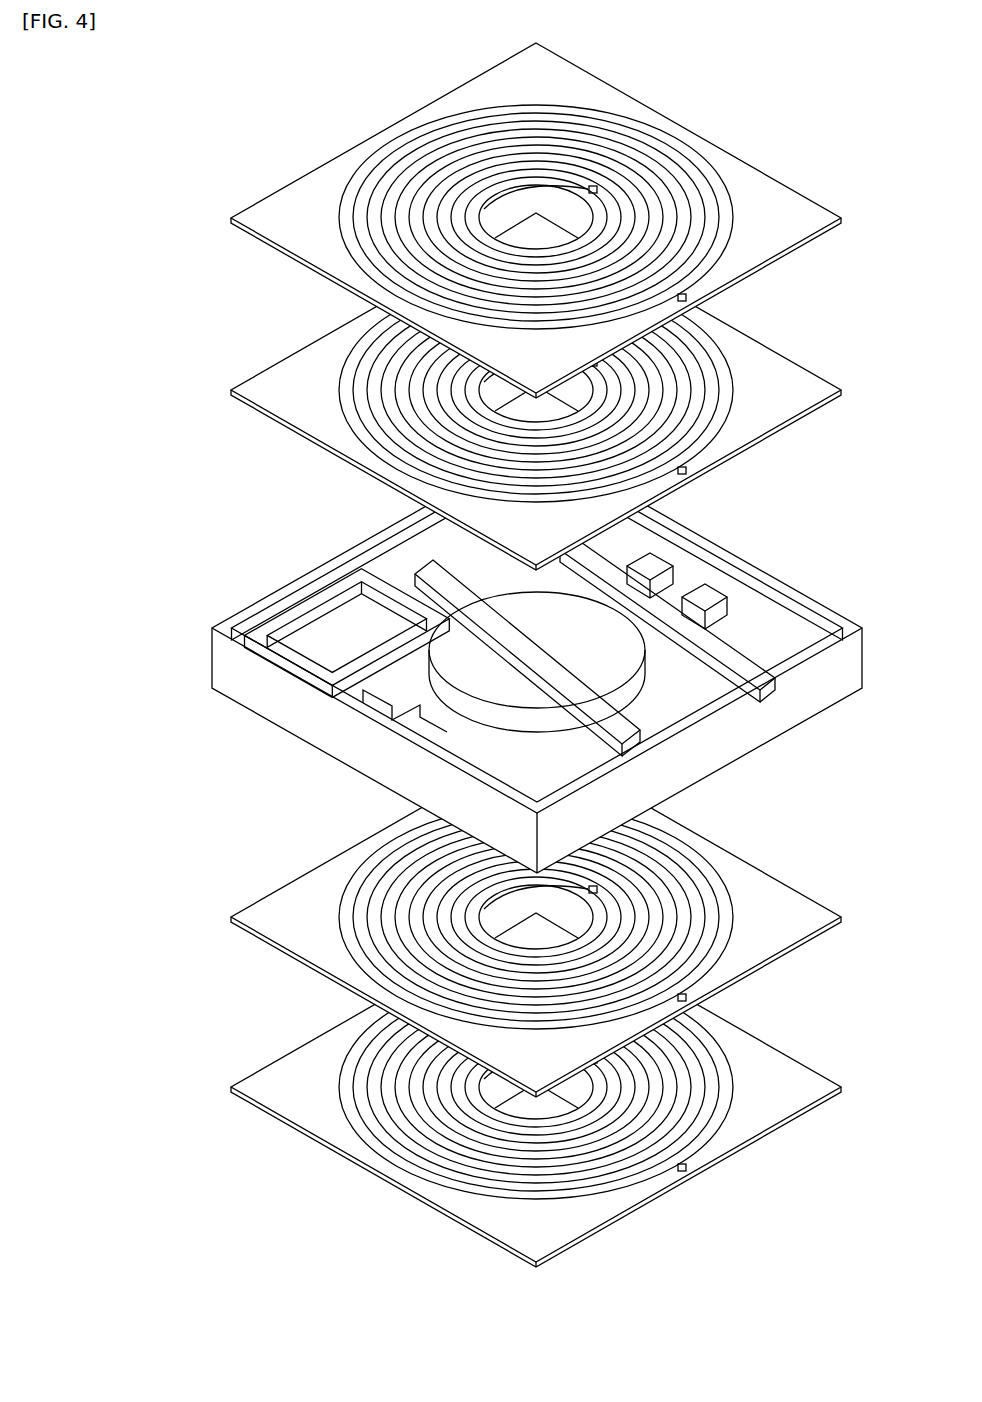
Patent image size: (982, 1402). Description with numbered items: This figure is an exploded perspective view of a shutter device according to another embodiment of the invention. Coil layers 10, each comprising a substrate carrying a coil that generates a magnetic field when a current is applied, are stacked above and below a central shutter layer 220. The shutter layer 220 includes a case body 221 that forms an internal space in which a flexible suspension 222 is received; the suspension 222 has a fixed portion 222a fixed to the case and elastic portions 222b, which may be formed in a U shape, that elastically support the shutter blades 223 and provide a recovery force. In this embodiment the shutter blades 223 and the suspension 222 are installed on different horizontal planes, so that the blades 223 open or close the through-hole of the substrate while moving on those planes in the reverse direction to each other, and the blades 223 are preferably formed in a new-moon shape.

The coil layer 10 is at (262, 297).
The case 220 is at (450, 658).
The case body 221 is at (767, 720).
The accommodating portion 222 is at (238, 655).
The first accommodating part (notch) 222a is at (355, 695).
The elastic portions 222b is at (290, 612).
The shutter blades 223 is at (503, 682).